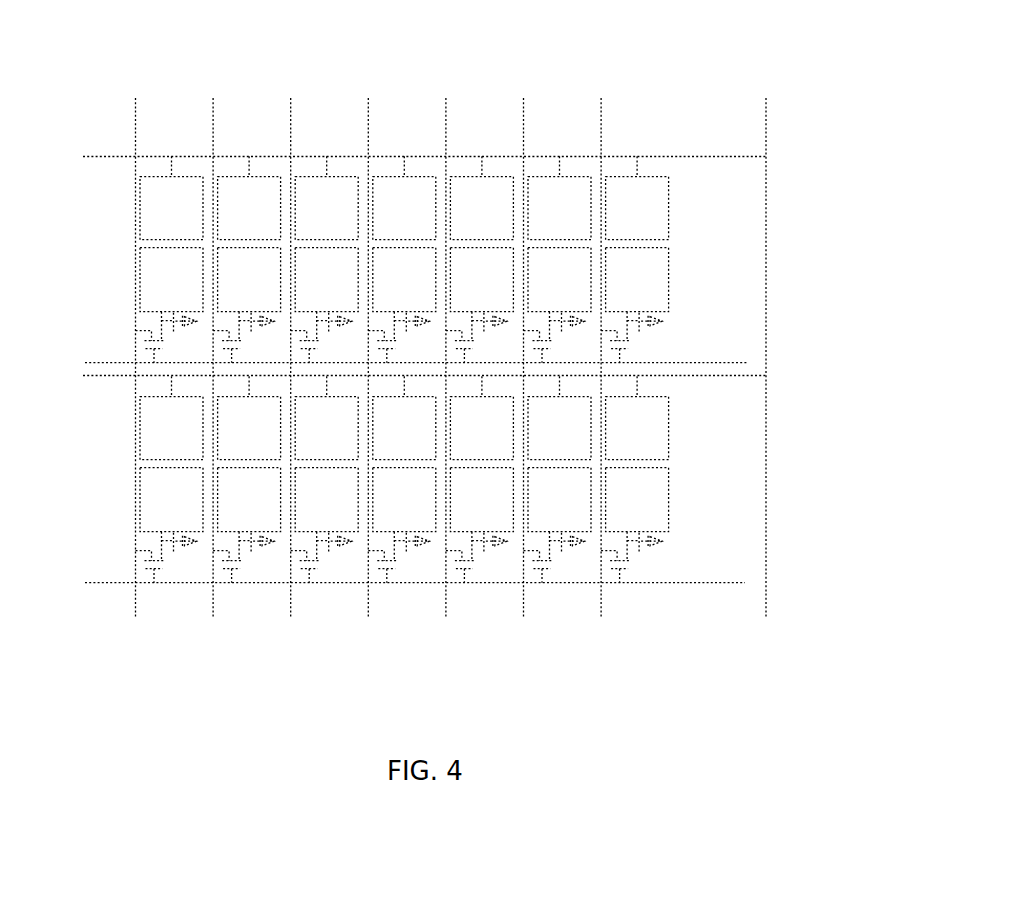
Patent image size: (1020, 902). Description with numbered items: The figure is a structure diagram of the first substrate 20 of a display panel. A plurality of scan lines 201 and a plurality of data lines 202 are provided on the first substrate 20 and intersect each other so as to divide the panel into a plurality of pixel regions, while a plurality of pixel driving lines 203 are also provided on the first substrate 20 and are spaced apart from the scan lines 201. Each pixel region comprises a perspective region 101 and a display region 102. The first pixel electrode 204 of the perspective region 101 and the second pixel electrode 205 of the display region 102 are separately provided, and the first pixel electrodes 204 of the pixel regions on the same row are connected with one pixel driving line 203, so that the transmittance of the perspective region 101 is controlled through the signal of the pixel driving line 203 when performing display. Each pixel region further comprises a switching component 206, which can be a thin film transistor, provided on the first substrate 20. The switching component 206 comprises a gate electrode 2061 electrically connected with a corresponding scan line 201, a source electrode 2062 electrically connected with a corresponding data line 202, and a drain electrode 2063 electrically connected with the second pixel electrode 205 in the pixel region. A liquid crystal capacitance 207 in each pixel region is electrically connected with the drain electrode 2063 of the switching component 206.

The first substrate 20 is at (712, 88).
The perspective region 101 is at (145, 165).
The display region 102 is at (143, 321).
The scan line 201 is at (668, 363).
The data line 202 is at (136, 125).
The pixel driving line 203 is at (618, 156).
The first pixel electrode 204 is at (155, 213).
The second pixel electrode 205 is at (155, 287).
The switching component 206 is at (651, 599).
The gate electrode 2061 is at (627, 563).
The source electrode 2062 is at (615, 555).
The drain electrode 2063 is at (627, 555).
The liquid crystal capacitance 207 is at (643, 542).